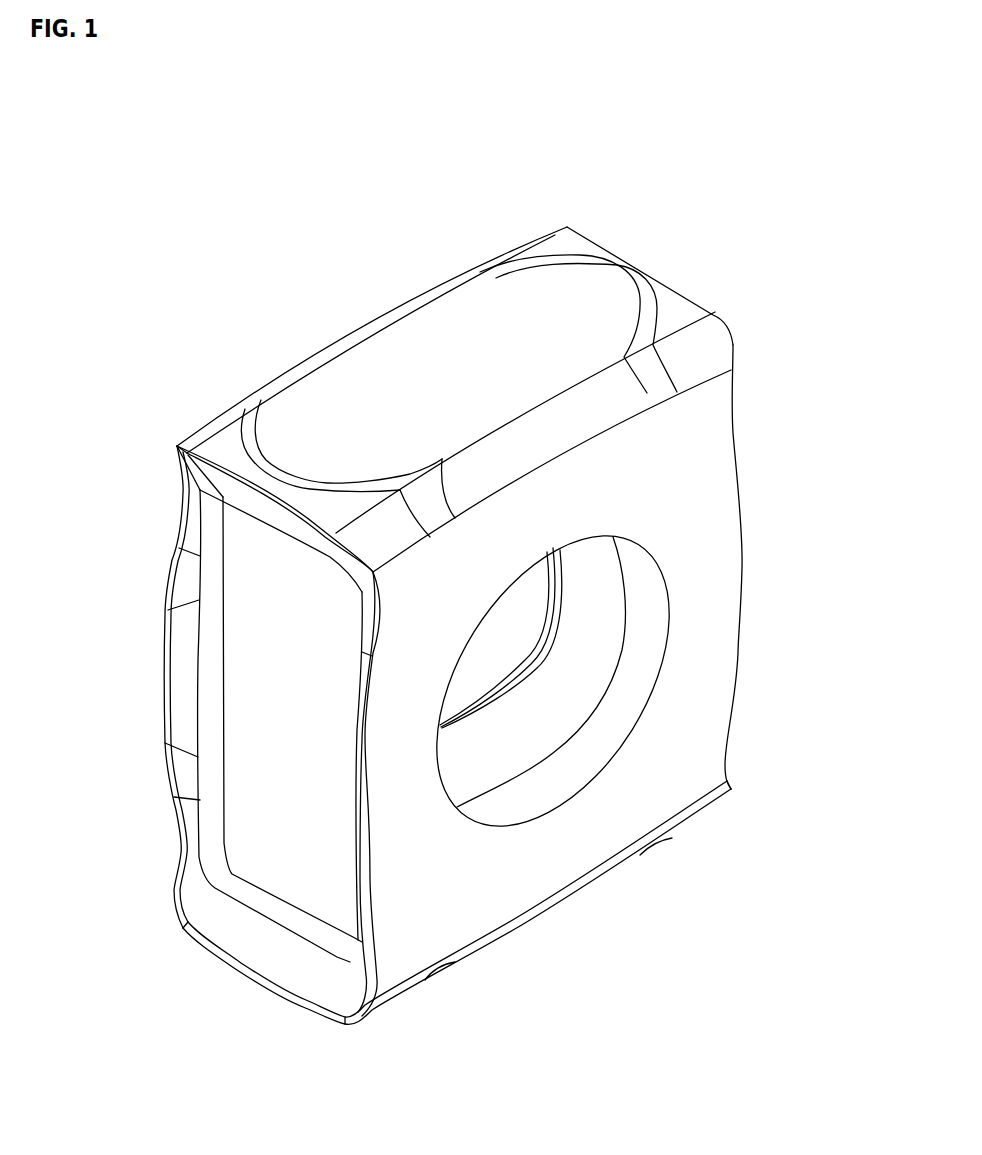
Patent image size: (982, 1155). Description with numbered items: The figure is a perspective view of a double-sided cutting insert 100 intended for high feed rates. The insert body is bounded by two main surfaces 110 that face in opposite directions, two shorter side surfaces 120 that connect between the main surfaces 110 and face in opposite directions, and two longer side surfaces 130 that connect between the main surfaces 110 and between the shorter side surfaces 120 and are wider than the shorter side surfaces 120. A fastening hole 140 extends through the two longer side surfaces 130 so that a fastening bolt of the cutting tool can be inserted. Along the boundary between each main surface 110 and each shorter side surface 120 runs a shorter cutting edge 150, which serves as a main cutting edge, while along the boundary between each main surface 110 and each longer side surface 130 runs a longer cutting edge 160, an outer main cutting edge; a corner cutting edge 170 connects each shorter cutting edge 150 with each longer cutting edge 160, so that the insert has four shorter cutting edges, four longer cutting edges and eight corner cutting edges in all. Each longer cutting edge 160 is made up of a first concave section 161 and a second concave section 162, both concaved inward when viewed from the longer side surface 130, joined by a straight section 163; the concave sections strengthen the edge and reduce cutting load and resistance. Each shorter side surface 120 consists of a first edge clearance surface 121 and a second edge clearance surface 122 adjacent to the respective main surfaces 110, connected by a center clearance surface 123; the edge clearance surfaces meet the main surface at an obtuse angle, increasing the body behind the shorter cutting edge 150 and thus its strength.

The double-sided cutting insert 100 is at (642, 212).
The main surface 110 is at (250, 763).
The shorter side surface 120 is at (470, 358).
The first edge clearance surface 121 is at (688, 310).
The second edge clearance surface 122 is at (223, 437).
The center clearance surface 123 is at (340, 380).
The longer side surface 130 is at (662, 788).
The fastening hole 140 is at (583, 663).
The shorter cutting edge 150 is at (177, 470).
The longer cutting edge 160 is at (752, 568).
The first concave section 161 is at (177, 503).
The second concave section 162 is at (177, 840).
The straight section 163 is at (167, 690).
The corner cutting edge 170 is at (177, 443).